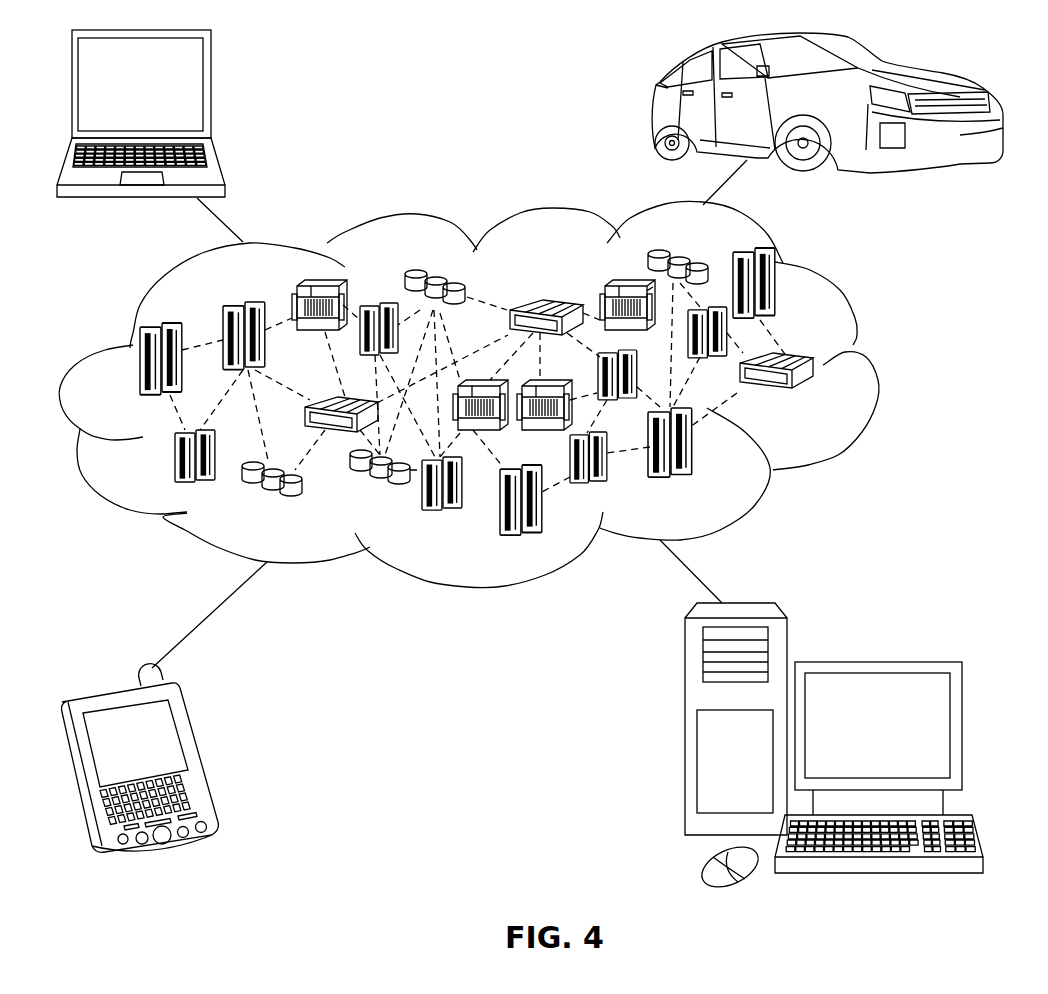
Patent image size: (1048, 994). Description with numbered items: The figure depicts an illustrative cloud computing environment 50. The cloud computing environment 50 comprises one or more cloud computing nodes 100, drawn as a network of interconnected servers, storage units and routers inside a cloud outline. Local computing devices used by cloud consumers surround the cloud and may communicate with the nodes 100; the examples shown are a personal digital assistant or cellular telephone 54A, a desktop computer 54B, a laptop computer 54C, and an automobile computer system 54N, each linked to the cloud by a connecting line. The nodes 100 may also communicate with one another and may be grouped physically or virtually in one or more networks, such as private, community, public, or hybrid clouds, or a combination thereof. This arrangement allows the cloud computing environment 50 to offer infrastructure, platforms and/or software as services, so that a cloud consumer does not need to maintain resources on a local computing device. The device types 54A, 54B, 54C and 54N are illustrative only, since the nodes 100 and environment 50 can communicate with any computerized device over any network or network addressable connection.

The cloud computing environment 50 is at (877, 370).
The cloud computing nodes 100 is at (815, 400).
The personal digital assistant (PDA) or cellular telephone 54A is at (200, 757).
The desktop computer 54B is at (875, 662).
The laptop computer 54C is at (211, 91).
The automobile computer system 54N is at (655, 108).